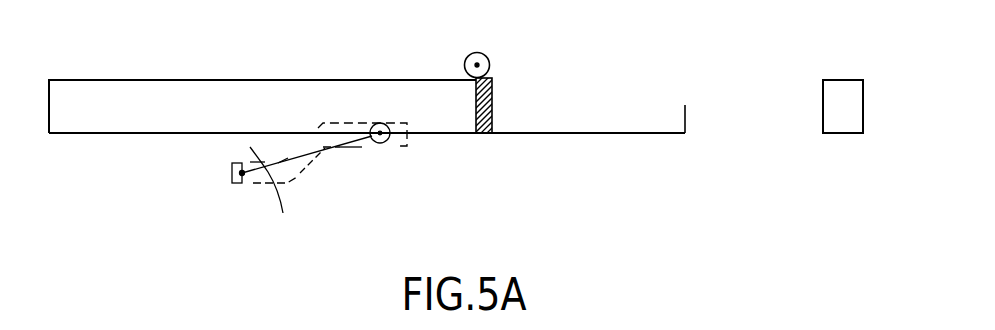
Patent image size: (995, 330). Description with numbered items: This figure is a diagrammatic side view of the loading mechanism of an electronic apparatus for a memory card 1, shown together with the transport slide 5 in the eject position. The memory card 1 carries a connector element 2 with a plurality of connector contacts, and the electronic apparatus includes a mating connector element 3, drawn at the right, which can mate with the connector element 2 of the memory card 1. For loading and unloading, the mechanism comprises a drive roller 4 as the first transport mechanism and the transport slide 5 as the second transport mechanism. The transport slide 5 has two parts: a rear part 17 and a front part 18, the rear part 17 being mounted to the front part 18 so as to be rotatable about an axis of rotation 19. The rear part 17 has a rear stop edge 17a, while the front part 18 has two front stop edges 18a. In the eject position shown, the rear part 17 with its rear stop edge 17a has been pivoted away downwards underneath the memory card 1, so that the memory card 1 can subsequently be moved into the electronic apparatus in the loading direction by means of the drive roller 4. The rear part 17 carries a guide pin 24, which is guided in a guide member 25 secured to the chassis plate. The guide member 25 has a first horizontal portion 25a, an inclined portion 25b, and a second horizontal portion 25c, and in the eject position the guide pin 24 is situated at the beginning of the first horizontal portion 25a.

The memory card 1 is at (157, 92).
The connector element 2 is at (492, 108).
The connector element 3 is at (832, 107).
The drive roller 4 is at (485, 57).
The transport slide 5 is at (667, 164).
The rear part 17 is at (274, 193).
The rear stop edge 17a is at (239, 141).
The front part 18 is at (560, 133).
The front stop edge 18a is at (688, 118).
The axis of rotation 19 is at (380, 123).
The guide pin 24 is at (242, 184).
The guide member 25 is at (324, 178).
The first horizontal portion 25a is at (250, 147).
The inclined portion 25b is at (311, 137).
The second horizontal portion 25c is at (362, 147).